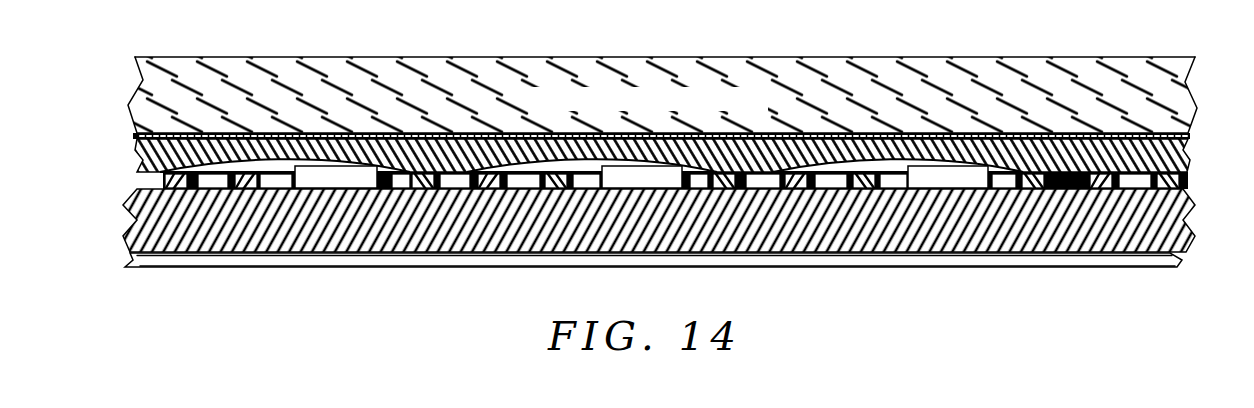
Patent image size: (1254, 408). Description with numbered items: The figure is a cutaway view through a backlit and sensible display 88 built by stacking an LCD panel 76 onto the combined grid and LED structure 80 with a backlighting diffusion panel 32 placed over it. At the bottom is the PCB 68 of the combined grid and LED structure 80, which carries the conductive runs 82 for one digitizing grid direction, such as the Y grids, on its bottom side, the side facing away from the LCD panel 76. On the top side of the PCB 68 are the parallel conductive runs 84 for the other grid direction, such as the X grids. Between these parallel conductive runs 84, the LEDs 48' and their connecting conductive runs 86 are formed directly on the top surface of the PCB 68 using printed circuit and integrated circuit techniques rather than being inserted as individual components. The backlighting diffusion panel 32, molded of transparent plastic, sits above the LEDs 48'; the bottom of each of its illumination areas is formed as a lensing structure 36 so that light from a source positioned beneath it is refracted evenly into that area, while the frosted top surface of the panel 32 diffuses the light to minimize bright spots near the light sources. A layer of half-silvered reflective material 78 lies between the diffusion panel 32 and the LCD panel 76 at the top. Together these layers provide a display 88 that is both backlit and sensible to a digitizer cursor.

The backlit and sensible display 88 is at (136, 45).
The LCD panel 76 is at (905, 90).
The half-silvered reflective material 78 is at (137, 135).
The backlighting diffusion panel 32 is at (1190, 148).
The lensing structure 36 is at (956, 162).
The LEDs 48' is at (641, 103).
The connecting conductive runs 86 is at (253, 172).
The conductive runs 84 is at (190, 175).
The PCB 68 is at (130, 213).
The combined grid and LED structure 80 is at (246, 272).
The conductive runs 82 is at (329, 267).